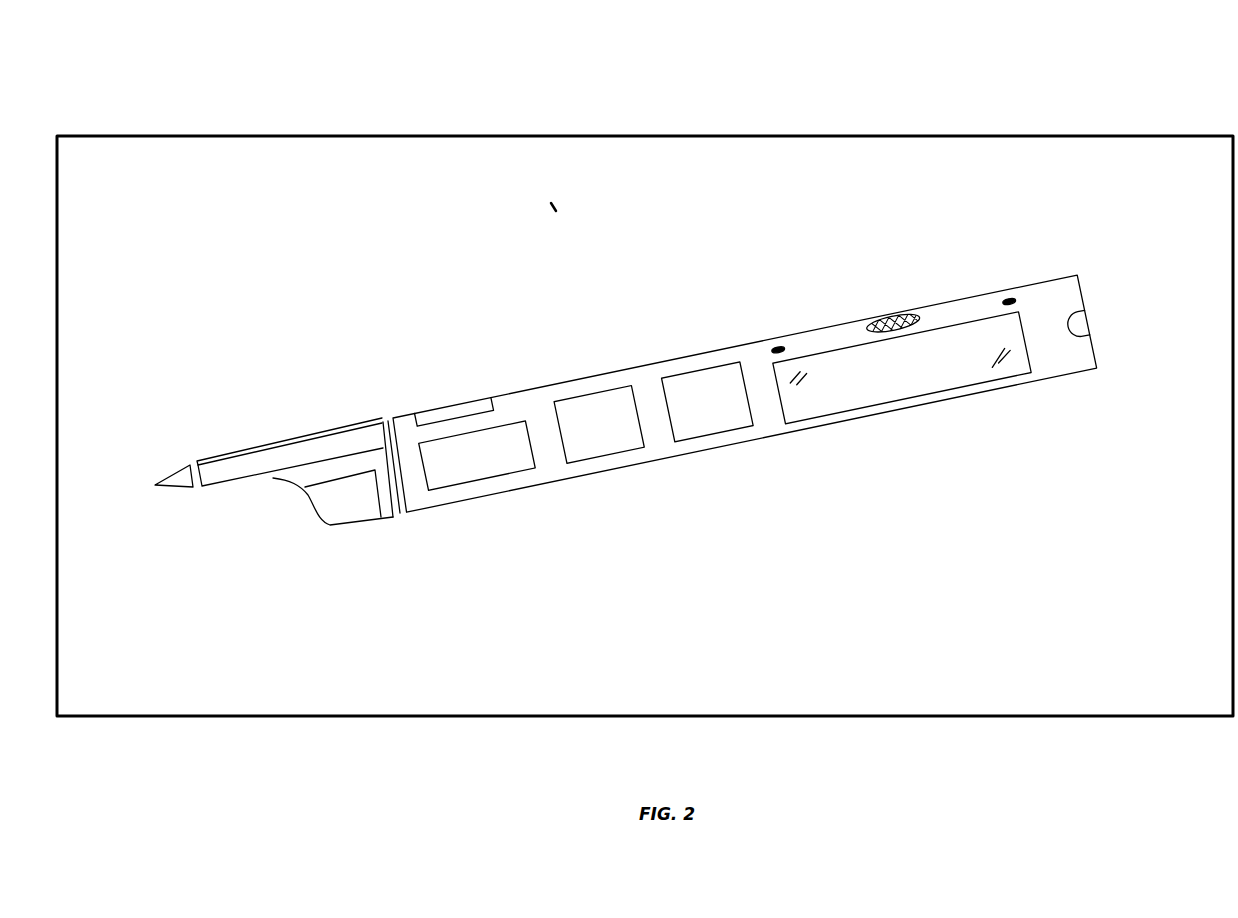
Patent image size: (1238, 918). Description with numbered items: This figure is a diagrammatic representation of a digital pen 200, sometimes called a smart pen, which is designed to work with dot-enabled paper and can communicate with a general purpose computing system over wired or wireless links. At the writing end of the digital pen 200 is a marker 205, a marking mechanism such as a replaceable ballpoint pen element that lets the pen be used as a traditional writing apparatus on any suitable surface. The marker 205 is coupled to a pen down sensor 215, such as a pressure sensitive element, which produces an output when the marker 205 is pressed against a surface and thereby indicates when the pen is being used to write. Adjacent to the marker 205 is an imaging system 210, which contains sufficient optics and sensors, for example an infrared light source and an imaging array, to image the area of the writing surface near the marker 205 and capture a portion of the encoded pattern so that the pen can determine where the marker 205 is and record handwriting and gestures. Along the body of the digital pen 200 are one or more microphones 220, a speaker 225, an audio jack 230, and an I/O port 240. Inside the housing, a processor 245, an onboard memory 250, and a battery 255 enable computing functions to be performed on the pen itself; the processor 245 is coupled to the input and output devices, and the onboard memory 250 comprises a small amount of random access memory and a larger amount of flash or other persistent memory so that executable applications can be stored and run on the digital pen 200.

The digital pen 200 is at (998, 85).
The marker 205 is at (155, 485).
The imaging system 210 is at (366, 512).
The pen down sensor 215 is at (402, 507).
The microphones 220 is at (779, 349).
The speaker 225 is at (891, 317).
The audio jack 230 is at (1080, 322).
The I/O port 240 is at (465, 402).
The processor 245 is at (726, 414).
The onboard memory 250 is at (618, 439).
The battery 255 is at (492, 472).